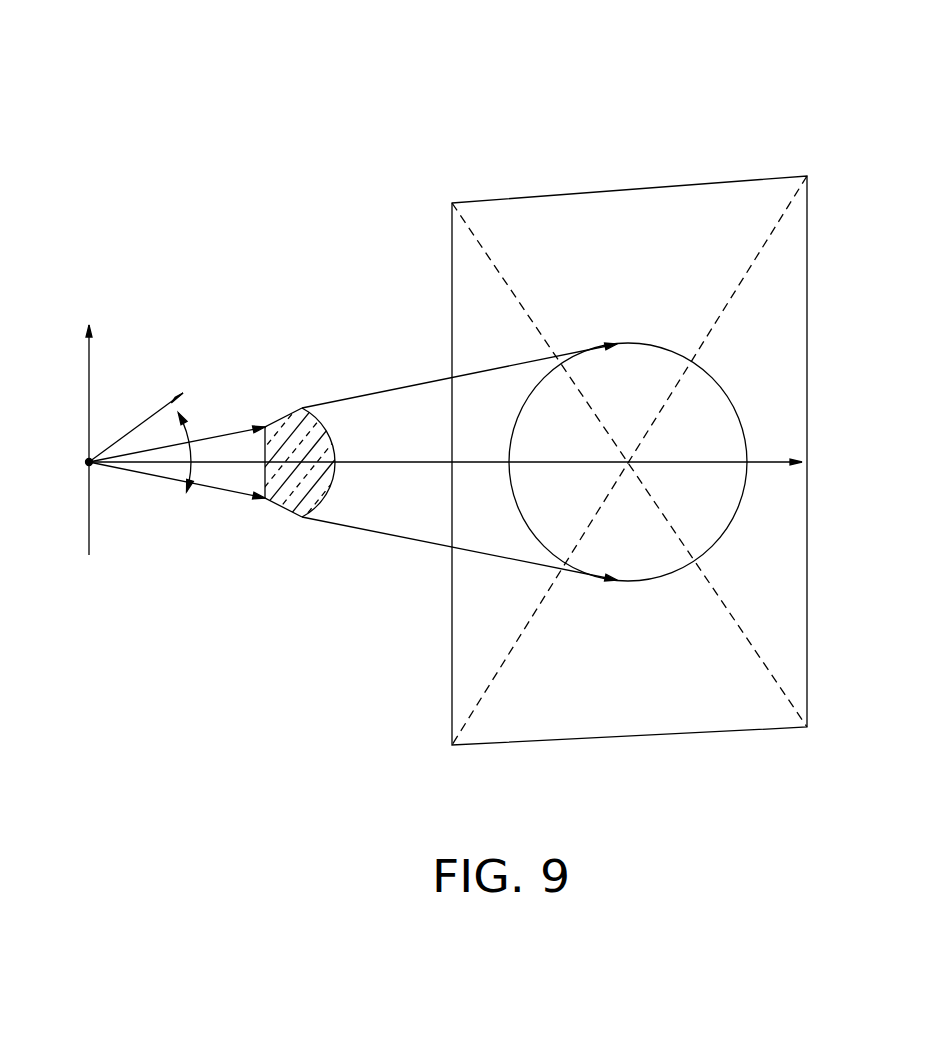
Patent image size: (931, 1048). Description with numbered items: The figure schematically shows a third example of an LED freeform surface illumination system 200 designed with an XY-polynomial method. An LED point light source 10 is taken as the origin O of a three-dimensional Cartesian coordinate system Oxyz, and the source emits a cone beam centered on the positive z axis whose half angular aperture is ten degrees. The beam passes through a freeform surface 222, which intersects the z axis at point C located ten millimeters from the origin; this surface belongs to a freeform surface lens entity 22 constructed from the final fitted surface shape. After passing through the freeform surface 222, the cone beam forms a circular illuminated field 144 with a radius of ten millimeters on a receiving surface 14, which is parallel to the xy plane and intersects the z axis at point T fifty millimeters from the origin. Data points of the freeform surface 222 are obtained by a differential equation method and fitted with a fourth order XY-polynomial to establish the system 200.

The LED freeform surface illumination system 200 is at (405, 108).
The LED point light source 10 is at (86, 464).
The freeform surface lens entity 22 is at (290, 500).
The freeform surface 222 is at (334, 435).
The receiving surface 14 is at (466, 631).
The circular illuminated field 144 is at (662, 347).